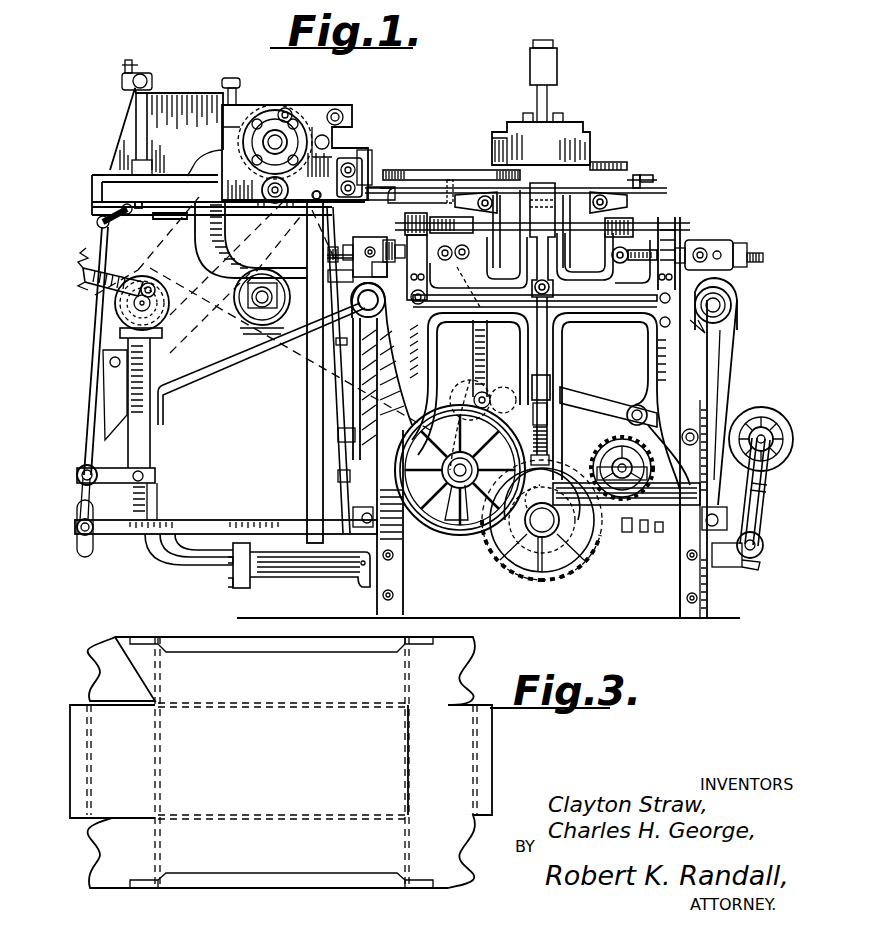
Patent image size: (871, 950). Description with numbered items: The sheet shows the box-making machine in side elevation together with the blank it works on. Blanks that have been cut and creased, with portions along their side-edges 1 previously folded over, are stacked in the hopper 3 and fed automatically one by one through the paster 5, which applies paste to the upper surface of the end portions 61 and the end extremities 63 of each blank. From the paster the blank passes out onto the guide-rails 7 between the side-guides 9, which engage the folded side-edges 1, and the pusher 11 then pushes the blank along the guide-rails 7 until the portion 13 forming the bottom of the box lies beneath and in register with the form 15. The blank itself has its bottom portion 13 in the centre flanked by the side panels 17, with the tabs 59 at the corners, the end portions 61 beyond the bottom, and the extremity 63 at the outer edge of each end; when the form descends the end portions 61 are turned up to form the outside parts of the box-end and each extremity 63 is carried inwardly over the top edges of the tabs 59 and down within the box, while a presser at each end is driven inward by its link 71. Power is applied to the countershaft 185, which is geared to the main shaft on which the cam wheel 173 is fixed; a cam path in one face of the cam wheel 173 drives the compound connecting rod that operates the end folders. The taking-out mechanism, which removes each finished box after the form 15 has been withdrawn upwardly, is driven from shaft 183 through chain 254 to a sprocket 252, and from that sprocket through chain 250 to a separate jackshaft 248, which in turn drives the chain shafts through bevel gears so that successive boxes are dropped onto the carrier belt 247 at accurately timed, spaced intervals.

In FIG. 3, the side-edges 1 is at (200, 637).
In FIG. 1, the hopper 3 is at (167, 93).
In FIG. 1, the paster 5 is at (313, 100).
In FIG. 1, the guide-rails 7 is at (372, 185).
In FIG. 1, the side-guides 9 is at (413, 168).
In FIG. 1, the pusher 11 is at (450, 180).
In FIG. 3, the bottom portion 13 is at (281, 762).
In FIG. 1, the form 15 is at (590, 140).
In FIG. 3, the side panel 17 is at (281, 762).
In FIG. 3, the tabs 59 is at (281, 762).
In FIG. 3, the end portions 61 is at (282, 761).
In FIG. 3, the end extremity 63 is at (70, 744).
In FIG. 1, the link 71 is at (680, 244).
In FIG. 1, the cam wheel 173 is at (594, 565).
In FIG. 1, the shaft 183 is at (500, 566).
In FIG. 1, the countershaft 185 is at (462, 482).
In FIG. 1, the carrier belt 247 is at (610, 392).
In FIG. 1, the jackshaft 248 is at (428, 252).
In FIG. 1, the chain 250 is at (448, 380).
In FIG. 1, the sprocket 252 is at (497, 388).
In FIG. 1, the chain 254 is at (552, 423).